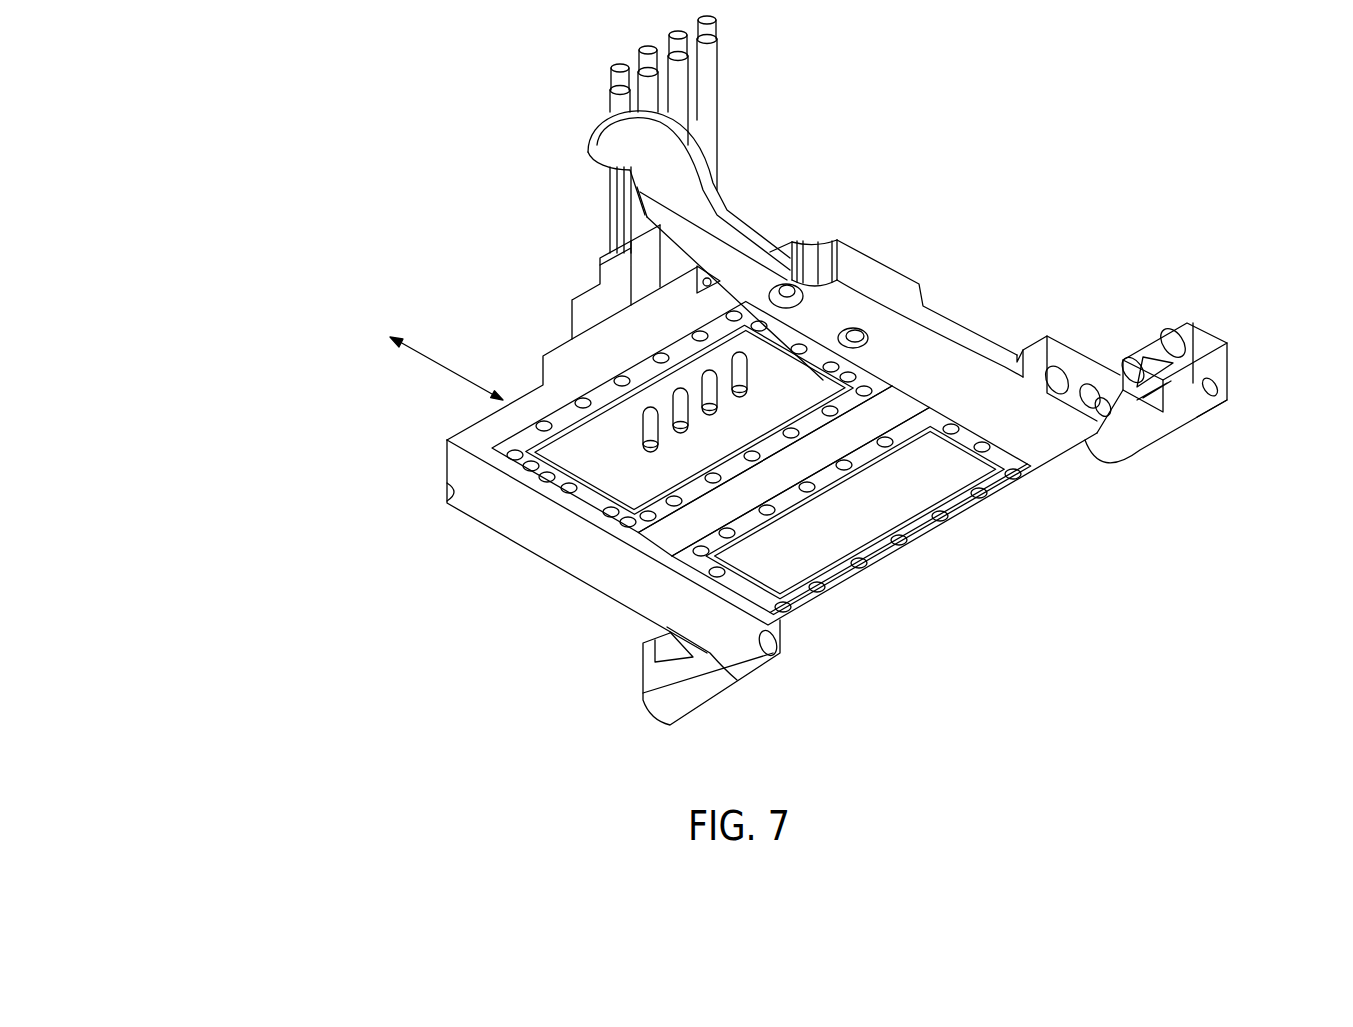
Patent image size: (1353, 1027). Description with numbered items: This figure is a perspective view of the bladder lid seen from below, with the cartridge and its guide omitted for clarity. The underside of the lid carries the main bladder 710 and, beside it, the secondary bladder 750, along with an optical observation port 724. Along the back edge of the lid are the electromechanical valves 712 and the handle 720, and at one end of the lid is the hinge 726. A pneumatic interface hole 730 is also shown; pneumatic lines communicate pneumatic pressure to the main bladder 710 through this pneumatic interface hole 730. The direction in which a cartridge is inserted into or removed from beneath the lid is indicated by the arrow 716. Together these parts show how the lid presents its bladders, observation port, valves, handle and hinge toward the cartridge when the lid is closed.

The main bladder 710 is at (586, 457).
The electromechanical valves 712 is at (567, 323).
The arrow 716 is at (462, 381).
The handle 720 is at (681, 187).
The optical observation port 724 is at (862, 430).
The hinge 726 is at (1222, 360).
The pneumatic interface hole 730 is at (766, 386).
The secondary bladder 750 is at (760, 562).